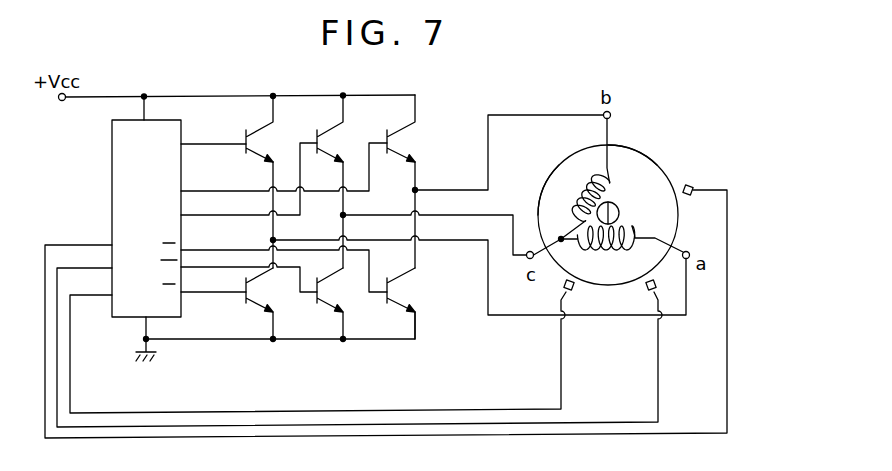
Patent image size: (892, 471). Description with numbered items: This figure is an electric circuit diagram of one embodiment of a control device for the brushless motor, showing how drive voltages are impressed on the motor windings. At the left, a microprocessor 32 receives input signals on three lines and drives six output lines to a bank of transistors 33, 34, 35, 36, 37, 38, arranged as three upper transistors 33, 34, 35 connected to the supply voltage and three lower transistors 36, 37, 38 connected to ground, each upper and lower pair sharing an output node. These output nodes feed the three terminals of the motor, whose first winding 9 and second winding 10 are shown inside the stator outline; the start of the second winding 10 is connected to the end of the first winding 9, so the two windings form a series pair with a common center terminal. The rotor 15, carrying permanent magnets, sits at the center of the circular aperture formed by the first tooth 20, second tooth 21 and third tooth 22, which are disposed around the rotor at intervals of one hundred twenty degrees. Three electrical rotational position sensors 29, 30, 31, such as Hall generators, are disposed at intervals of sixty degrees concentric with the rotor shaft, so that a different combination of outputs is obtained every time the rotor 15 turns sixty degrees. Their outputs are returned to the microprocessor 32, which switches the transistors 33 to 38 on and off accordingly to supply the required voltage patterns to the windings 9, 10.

The first winding 9 is at (580, 190).
The second winding 10 is at (605, 252).
The rotor 15 is at (618, 205).
The first tooth 20 is at (680, 224).
The second tooth 21 is at (541, 203).
The third tooth 22 is at (632, 148).
The position sensor 29 is at (692, 184).
The position sensor 30 is at (658, 285).
The position sensor 31 is at (566, 283).
The microprocessor 32 is at (116, 196).
The transistor 33 is at (250, 140).
The transistor 34 is at (320, 140).
The transistor 35 is at (390, 140).
The transistor 36 is at (257, 292).
The transistor 37 is at (327, 292).
The transistor 38 is at (397, 290).